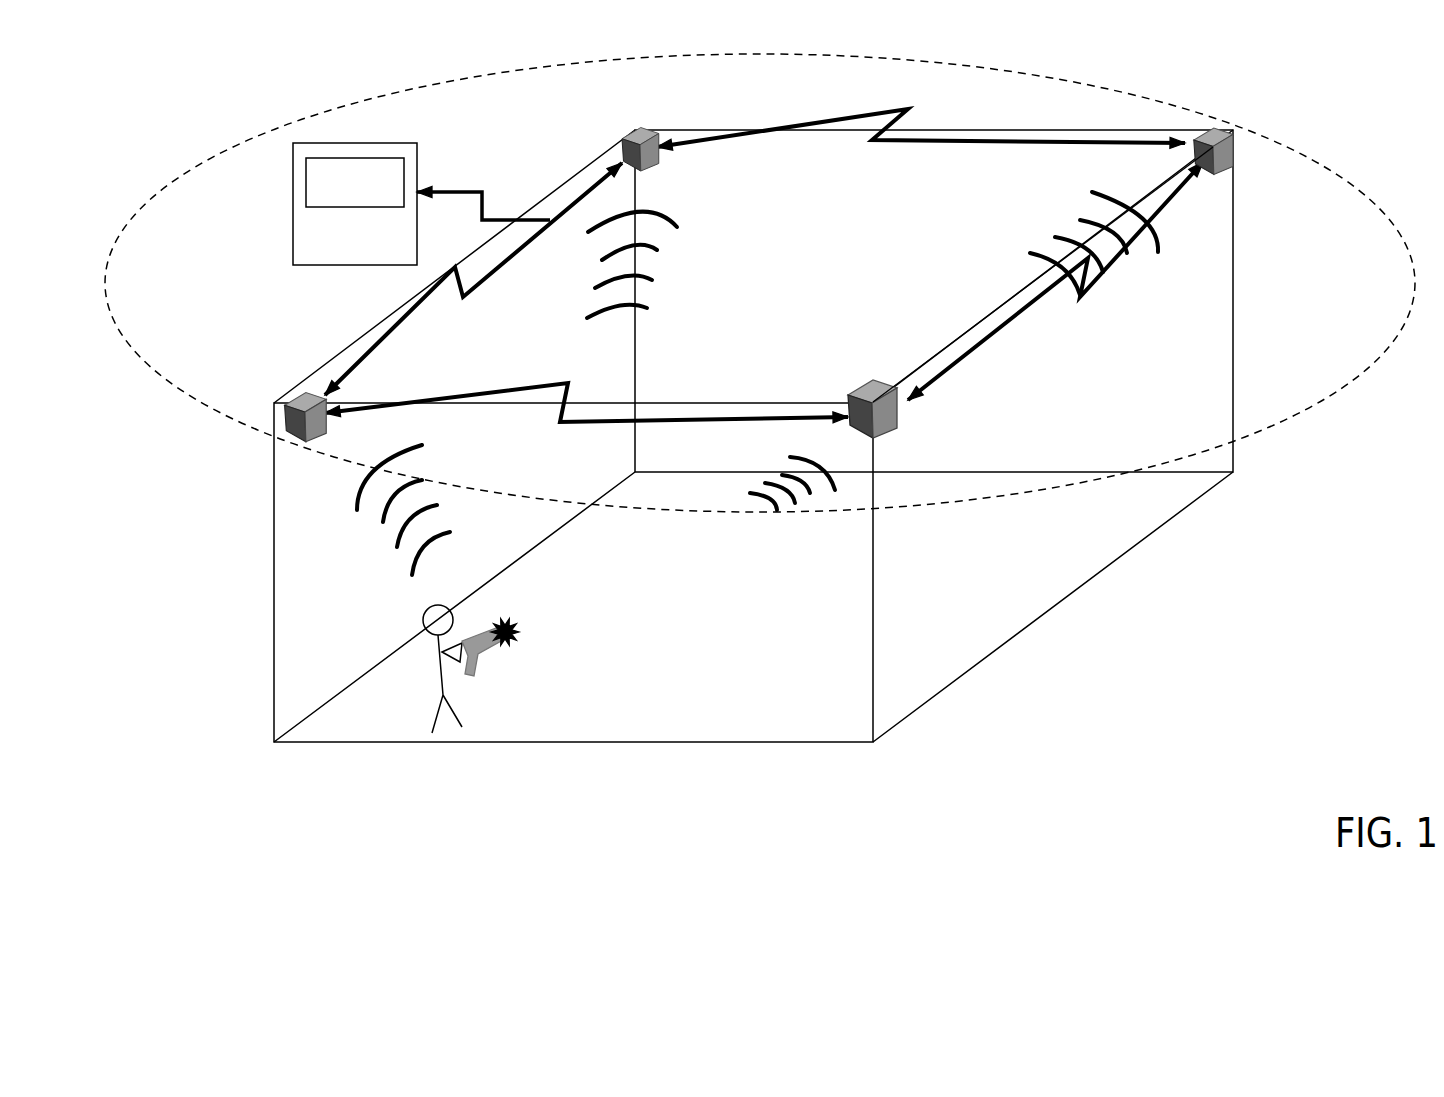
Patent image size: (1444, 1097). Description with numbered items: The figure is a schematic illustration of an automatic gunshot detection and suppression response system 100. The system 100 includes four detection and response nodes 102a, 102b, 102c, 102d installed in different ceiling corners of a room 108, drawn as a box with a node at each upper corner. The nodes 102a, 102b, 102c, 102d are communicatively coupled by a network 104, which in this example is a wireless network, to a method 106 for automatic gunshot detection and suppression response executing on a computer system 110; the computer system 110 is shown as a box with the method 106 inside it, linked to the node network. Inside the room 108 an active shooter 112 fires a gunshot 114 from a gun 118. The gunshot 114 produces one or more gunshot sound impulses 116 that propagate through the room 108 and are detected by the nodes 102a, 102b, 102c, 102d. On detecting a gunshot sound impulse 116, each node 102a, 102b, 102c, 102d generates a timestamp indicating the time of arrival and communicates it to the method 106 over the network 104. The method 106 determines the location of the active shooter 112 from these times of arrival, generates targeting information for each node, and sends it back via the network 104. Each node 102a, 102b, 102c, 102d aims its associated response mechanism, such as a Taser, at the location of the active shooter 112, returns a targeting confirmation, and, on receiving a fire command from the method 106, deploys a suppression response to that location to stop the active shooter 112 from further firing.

The automatic gunshot detection and suppression response system 100 is at (198, 161).
The detection and response node 102a is at (618, 150).
The detection and response node 102b is at (1220, 163).
The detection and response node 102c is at (893, 418).
The detection and response node 102d is at (273, 402).
The network 104 is at (1010, 327).
The method for automatic gunshot detection and suppression response 106 is at (369, 194).
The room 108 is at (1048, 612).
The computer system 110 is at (401, 258).
The active shooter 112 is at (455, 712).
The gunshot 114 is at (517, 638).
The gunshot sound impulse 116 is at (763, 512).
The gun 118 is at (477, 678).